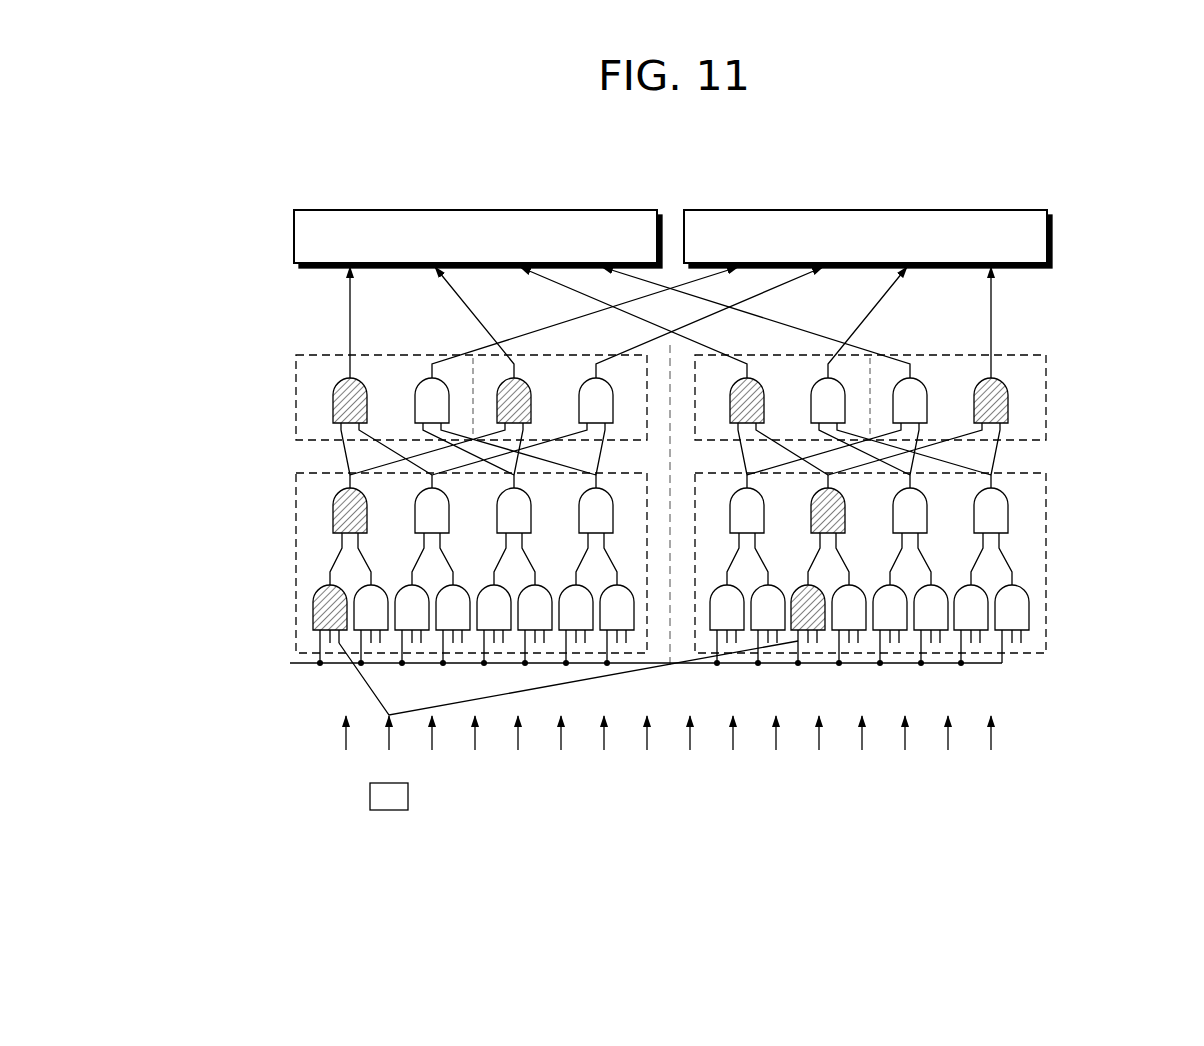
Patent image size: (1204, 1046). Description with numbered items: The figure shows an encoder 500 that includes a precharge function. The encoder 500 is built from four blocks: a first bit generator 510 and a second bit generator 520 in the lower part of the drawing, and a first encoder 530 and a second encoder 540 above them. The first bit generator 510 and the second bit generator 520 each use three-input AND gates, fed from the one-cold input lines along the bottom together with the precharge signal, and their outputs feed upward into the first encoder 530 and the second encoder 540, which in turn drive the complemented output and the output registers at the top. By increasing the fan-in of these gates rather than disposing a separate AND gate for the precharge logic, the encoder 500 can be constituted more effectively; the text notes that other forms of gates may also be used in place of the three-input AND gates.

The encoder 500 is at (1073, 160).
The first bit generator 510 is at (296, 589).
The second bit generator 520 is at (1046, 589).
The first encoder 530 is at (296, 397).
The second encoder 540 is at (1046, 397).